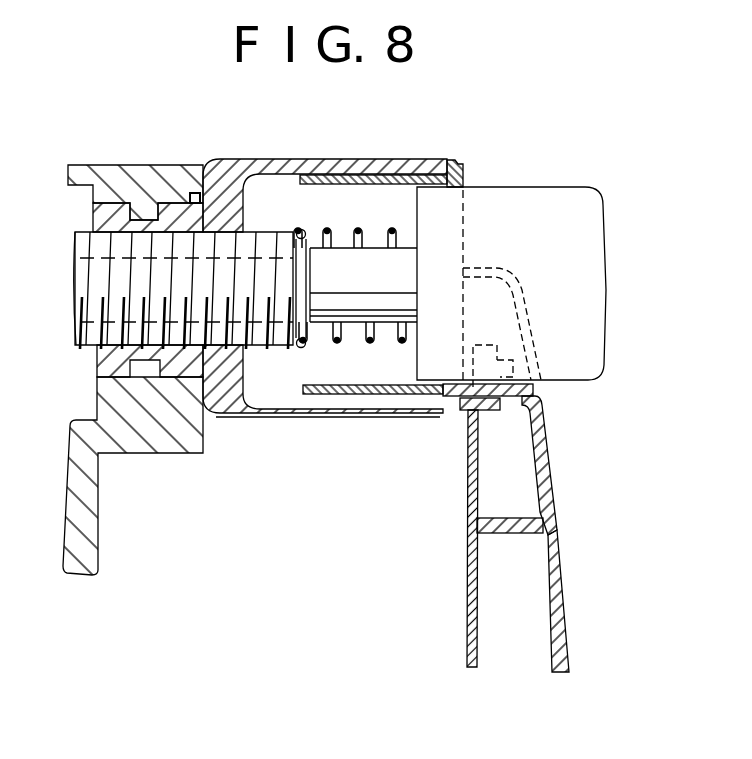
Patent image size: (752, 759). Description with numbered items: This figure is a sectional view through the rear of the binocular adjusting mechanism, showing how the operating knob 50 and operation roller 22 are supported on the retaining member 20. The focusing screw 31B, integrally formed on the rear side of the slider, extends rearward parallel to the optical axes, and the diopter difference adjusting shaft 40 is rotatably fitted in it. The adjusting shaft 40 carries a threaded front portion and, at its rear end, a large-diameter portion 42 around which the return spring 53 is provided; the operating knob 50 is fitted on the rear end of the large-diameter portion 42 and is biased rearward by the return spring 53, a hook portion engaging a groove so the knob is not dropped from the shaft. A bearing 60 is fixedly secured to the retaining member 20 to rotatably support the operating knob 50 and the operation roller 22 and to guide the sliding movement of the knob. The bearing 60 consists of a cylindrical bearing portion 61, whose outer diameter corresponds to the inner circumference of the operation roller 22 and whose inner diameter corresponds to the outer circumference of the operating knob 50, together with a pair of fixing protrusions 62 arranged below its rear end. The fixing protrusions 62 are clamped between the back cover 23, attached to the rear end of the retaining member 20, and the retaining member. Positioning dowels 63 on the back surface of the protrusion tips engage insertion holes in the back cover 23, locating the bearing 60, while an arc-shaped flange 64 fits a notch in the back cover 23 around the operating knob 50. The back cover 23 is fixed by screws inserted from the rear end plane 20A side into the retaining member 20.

The retaining member 20 is at (142, 173).
The rear end plane 20A is at (568, 603).
The operating roller 22 is at (295, 158).
The back cover 23 is at (550, 500).
The focusing screw 31B is at (87, 282).
The diopter difference adjusting shaft 40 is at (73, 230).
The large-diameter portion 42 is at (355, 303).
The operating knob 50 is at (545, 186).
The return spring 53 is at (327, 233).
The bearing 60 is at (462, 164).
The bearing portion 61 is at (391, 177).
The fixing protrusion 62 is at (497, 348).
The positioning dowel 63 is at (513, 372).
The arc-shaped flange 64 is at (512, 298).